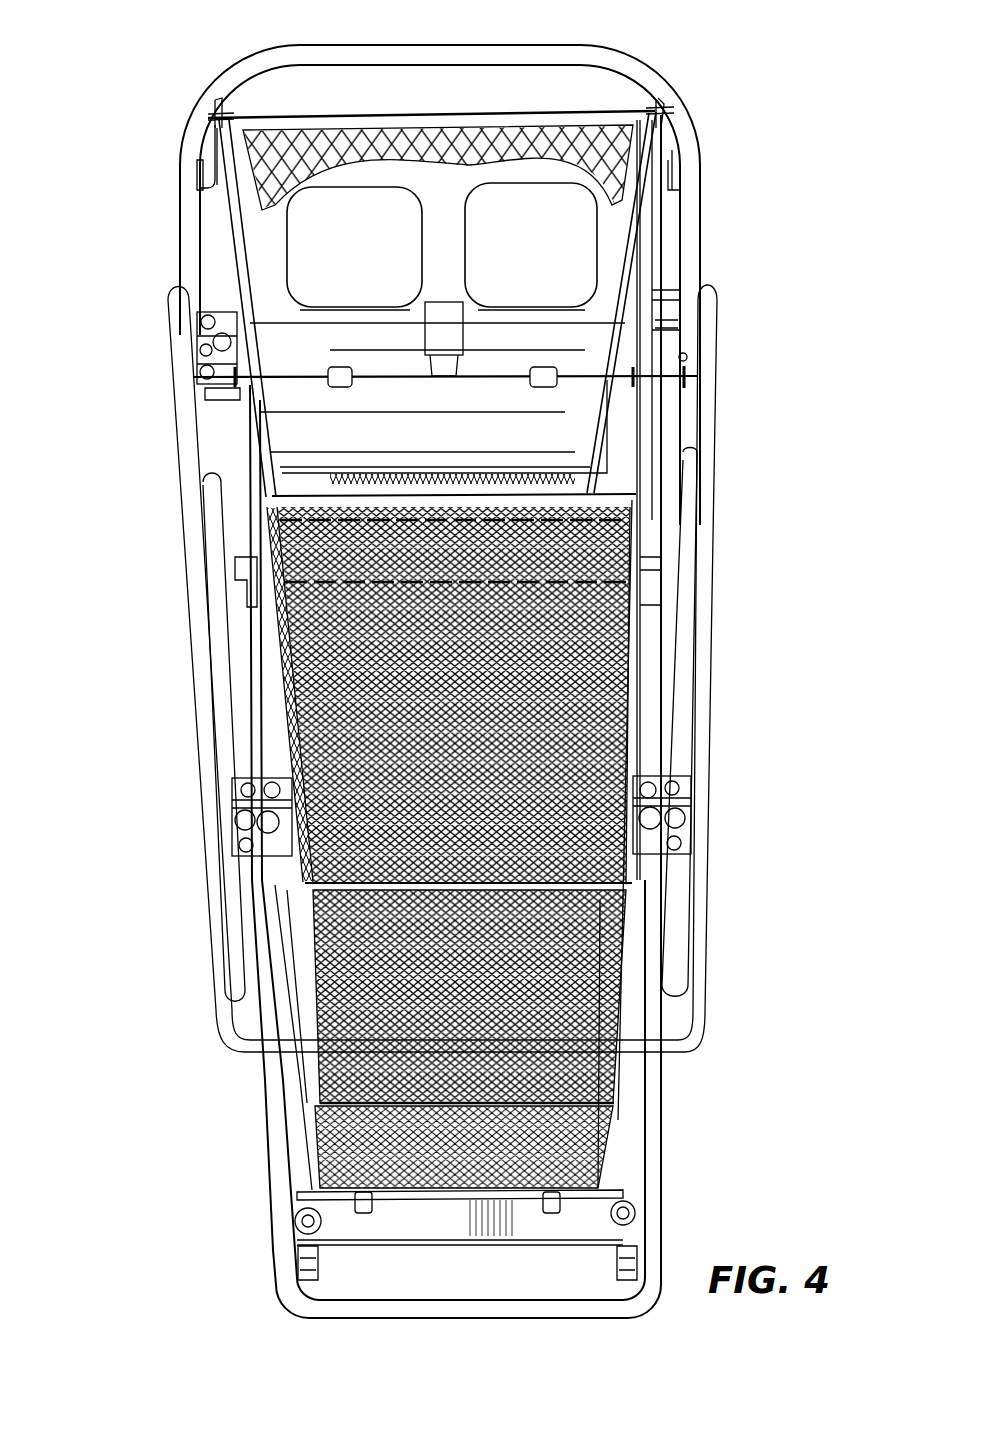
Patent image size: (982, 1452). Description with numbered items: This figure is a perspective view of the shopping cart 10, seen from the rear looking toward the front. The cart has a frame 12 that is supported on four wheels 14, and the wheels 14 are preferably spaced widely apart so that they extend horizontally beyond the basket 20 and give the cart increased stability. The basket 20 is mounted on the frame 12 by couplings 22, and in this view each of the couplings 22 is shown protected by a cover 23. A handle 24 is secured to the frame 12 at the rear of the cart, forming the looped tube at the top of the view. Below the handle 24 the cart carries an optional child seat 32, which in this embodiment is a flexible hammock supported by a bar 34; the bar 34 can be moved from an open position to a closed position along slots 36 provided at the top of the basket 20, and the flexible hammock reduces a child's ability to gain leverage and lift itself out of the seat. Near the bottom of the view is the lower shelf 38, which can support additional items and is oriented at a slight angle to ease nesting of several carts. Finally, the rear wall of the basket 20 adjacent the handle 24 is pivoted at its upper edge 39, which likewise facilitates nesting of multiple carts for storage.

The shopping cart 10 is at (120, 146).
The frame 12 is at (710, 540).
The wheels 14 is at (318, 1268).
The basket 20 is at (593, 673).
The couplings 22 is at (218, 300).
The cover 23 is at (670, 300).
The handle 24 is at (545, 42).
The child seat 32 is at (290, 433).
The bar 34 is at (232, 388).
The slots 36 is at (227, 247).
The lower shelf 38 is at (583, 1148).
The upper edge 39 is at (213, 116).